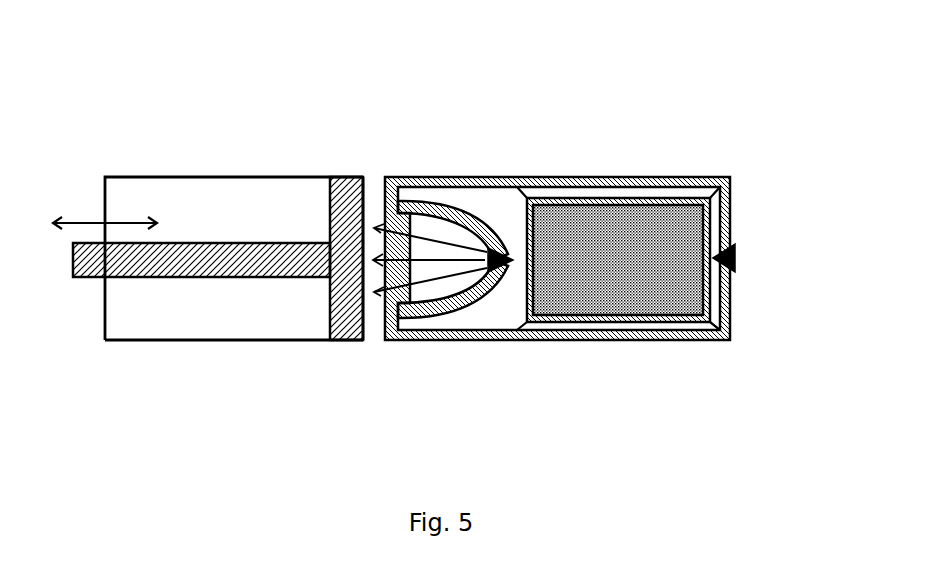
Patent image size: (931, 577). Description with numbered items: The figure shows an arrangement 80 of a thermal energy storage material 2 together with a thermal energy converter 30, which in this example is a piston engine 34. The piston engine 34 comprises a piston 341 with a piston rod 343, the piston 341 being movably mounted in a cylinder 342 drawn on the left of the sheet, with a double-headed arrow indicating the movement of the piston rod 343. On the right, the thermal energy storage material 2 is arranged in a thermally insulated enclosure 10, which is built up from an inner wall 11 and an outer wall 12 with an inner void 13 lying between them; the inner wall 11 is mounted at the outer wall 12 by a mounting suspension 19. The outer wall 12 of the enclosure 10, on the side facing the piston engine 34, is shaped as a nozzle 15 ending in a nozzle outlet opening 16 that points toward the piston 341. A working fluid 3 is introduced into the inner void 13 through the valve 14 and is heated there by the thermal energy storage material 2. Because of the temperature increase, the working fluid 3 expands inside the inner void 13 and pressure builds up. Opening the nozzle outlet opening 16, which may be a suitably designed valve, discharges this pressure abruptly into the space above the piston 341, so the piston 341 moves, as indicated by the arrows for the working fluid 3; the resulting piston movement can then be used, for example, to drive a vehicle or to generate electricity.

The thermal energy storage material 2 is at (592, 272).
The working fluid 3 is at (412, 285).
The thermally insulated enclosure 10 is at (665, 153).
The inner wall 11 is at (690, 319).
The outer wall 12 is at (728, 177).
The inner void 13 is at (597, 190).
The valve 14 is at (732, 250).
The nozzle 15 is at (455, 299).
The nozzle outlet opening 16 is at (505, 268).
The mounting suspension 19 is at (717, 328).
The thermal energy converter 30 is at (148, 158).
The piston engine 34 is at (255, 207).
The arrangement 80 is at (313, 115).
The piston 341 is at (348, 326).
The cylinder 342 is at (253, 342).
The piston rod 343 is at (222, 262).